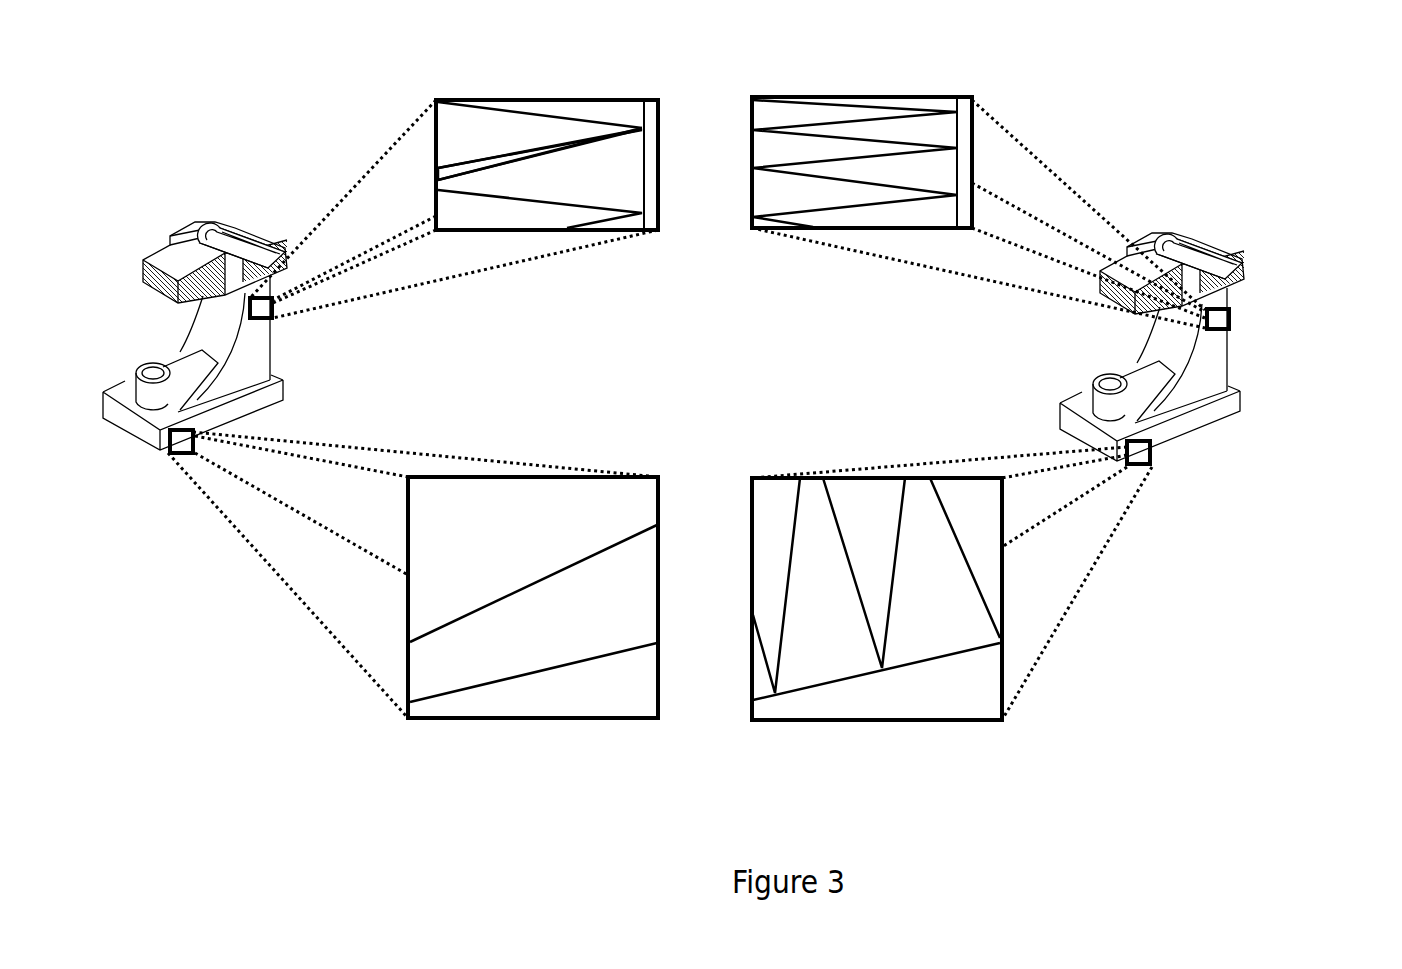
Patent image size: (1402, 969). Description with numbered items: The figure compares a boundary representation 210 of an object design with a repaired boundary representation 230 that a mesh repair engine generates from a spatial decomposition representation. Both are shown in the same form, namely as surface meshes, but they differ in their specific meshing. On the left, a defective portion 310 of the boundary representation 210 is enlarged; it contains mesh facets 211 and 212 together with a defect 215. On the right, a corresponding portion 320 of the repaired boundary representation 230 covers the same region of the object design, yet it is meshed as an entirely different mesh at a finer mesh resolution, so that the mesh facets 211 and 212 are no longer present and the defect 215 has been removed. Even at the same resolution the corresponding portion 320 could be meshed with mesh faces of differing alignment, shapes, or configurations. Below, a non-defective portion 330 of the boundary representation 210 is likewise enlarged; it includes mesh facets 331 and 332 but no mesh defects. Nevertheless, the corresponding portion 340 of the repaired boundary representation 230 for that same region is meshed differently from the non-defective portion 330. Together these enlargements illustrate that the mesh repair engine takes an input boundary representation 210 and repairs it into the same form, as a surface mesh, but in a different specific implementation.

The boundary representation 210 is at (272, 405).
The mesh facet 211 is at (455, 142).
The mesh facet 212 is at (566, 168).
The defect 215 is at (465, 182).
The repaired boundary representation 230 is at (1185, 437).
The defective portion 310 is at (489, 181).
The corresponding portion 320 is at (820, 97).
The non-defective portion 330 is at (401, 593).
The mesh facet 331 is at (427, 603).
The mesh facet 332 is at (450, 746).
The corresponding portion 340 is at (784, 720).